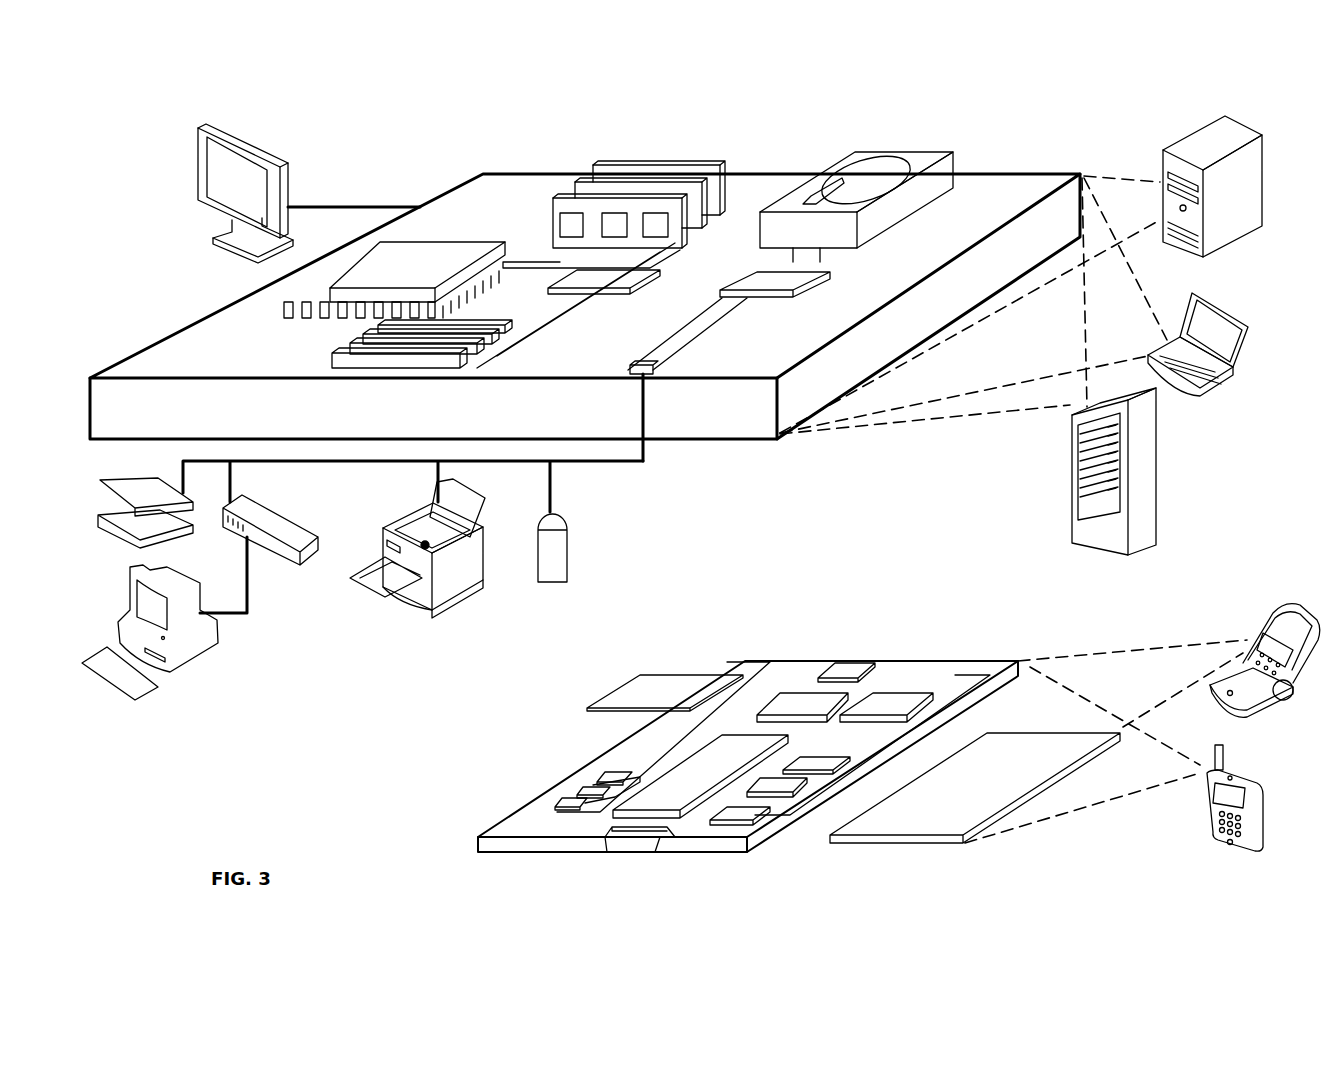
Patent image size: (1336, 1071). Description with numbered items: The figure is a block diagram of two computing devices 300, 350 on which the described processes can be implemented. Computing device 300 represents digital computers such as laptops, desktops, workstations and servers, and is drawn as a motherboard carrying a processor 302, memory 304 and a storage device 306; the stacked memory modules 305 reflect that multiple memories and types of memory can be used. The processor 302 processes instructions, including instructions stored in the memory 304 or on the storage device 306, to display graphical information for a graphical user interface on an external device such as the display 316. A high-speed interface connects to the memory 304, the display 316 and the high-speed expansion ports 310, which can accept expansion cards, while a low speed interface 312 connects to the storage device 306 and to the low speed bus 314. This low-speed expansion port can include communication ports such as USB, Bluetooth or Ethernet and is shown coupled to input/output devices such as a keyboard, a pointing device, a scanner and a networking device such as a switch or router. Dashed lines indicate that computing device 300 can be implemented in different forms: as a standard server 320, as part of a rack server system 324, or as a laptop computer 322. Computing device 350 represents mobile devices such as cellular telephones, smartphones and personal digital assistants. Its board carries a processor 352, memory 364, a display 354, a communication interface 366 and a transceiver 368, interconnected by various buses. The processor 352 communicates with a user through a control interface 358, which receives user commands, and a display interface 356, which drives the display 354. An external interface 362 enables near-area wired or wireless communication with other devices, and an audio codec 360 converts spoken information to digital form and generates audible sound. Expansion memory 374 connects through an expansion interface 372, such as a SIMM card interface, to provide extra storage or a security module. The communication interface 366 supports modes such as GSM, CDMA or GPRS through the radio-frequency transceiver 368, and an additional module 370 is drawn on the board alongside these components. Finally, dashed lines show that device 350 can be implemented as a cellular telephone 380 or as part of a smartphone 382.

The computing device 300 is at (1258, 103).
The processor 302 is at (262, 302).
The memory 304 is at (623, 163).
The memory modules 305 is at (590, 170).
The storage device 306 is at (857, 150).
The high-speed expansion ports 310 is at (353, 345).
The low speed interface 312 is at (762, 280).
The low speed bus 314 is at (653, 372).
The display 316 is at (217, 121).
The standard server 320 is at (1177, 143).
The laptop computer 322 is at (1228, 388).
The rack server system 324 is at (1070, 514).
The computing device 350 is at (468, 744).
The processor 352 is at (683, 797).
The display 354 is at (943, 813).
The display interface 356 is at (733, 812).
The control interface 358 is at (775, 792).
The audio codec 360 is at (818, 763).
The external interface 362 is at (633, 847).
The memory 364 is at (585, 788).
The communication interface 366 is at (795, 697).
The transceiver 368 is at (892, 700).
The chip 370 is at (857, 663).
The expansion interface 372 is at (727, 673).
The expansion memory 374 is at (630, 685).
The cellular telephone 380 is at (1260, 618).
The smartphone 382 is at (1203, 805).